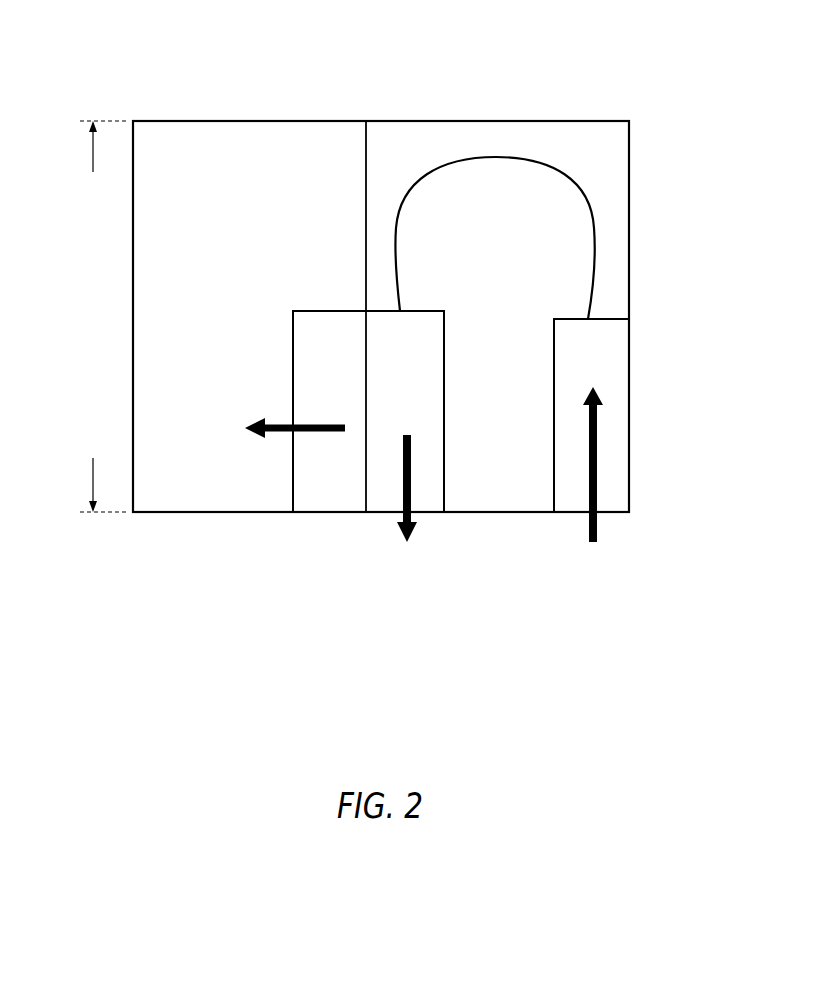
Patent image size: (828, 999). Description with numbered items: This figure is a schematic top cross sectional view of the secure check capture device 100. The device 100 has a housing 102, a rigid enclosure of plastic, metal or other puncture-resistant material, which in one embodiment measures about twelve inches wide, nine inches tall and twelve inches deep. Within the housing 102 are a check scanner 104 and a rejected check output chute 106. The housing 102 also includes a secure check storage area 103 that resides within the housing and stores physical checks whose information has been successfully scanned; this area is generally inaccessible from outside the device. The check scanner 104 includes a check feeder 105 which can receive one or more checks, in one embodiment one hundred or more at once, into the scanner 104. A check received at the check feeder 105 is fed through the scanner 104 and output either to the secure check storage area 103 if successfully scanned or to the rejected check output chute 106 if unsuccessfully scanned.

The secure check capture device 100 is at (97, 602).
The housing 102 is at (435, 136).
The secure check storage area 103 is at (221, 338).
The check scanner 104 is at (504, 304).
The check feeder 105 is at (592, 363).
The rejected check output chute 106 is at (407, 363).